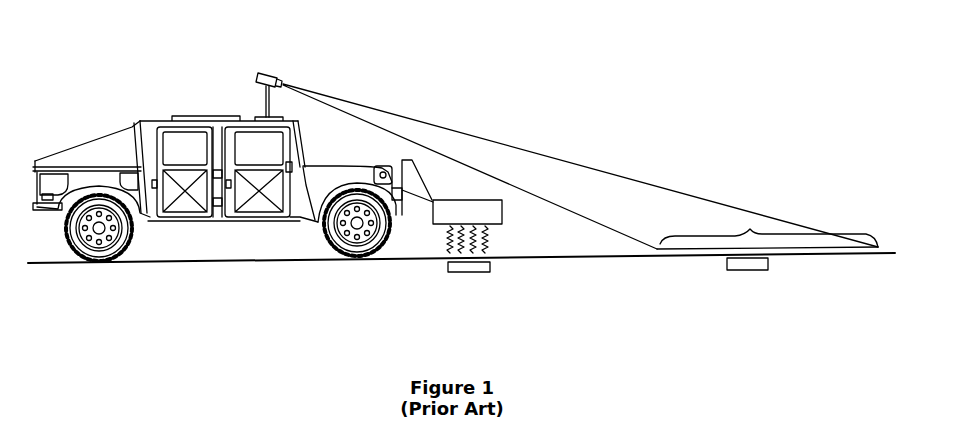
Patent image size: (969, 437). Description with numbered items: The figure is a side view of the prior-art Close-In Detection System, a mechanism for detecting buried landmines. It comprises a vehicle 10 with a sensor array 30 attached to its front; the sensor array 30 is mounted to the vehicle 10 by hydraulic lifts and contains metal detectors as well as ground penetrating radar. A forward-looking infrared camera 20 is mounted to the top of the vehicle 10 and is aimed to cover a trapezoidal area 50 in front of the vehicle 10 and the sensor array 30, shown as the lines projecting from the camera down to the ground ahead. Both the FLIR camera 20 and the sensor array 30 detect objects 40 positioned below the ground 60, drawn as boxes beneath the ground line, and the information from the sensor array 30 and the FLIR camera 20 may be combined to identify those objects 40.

The vehicle 10 is at (140, 121).
The forward-looking infrared camera 20 is at (280, 71).
The sensor array 30 is at (465, 196).
The objects 40 is at (460, 275).
The trapezoidal area 50 is at (739, 226).
The ground 60 is at (222, 262).